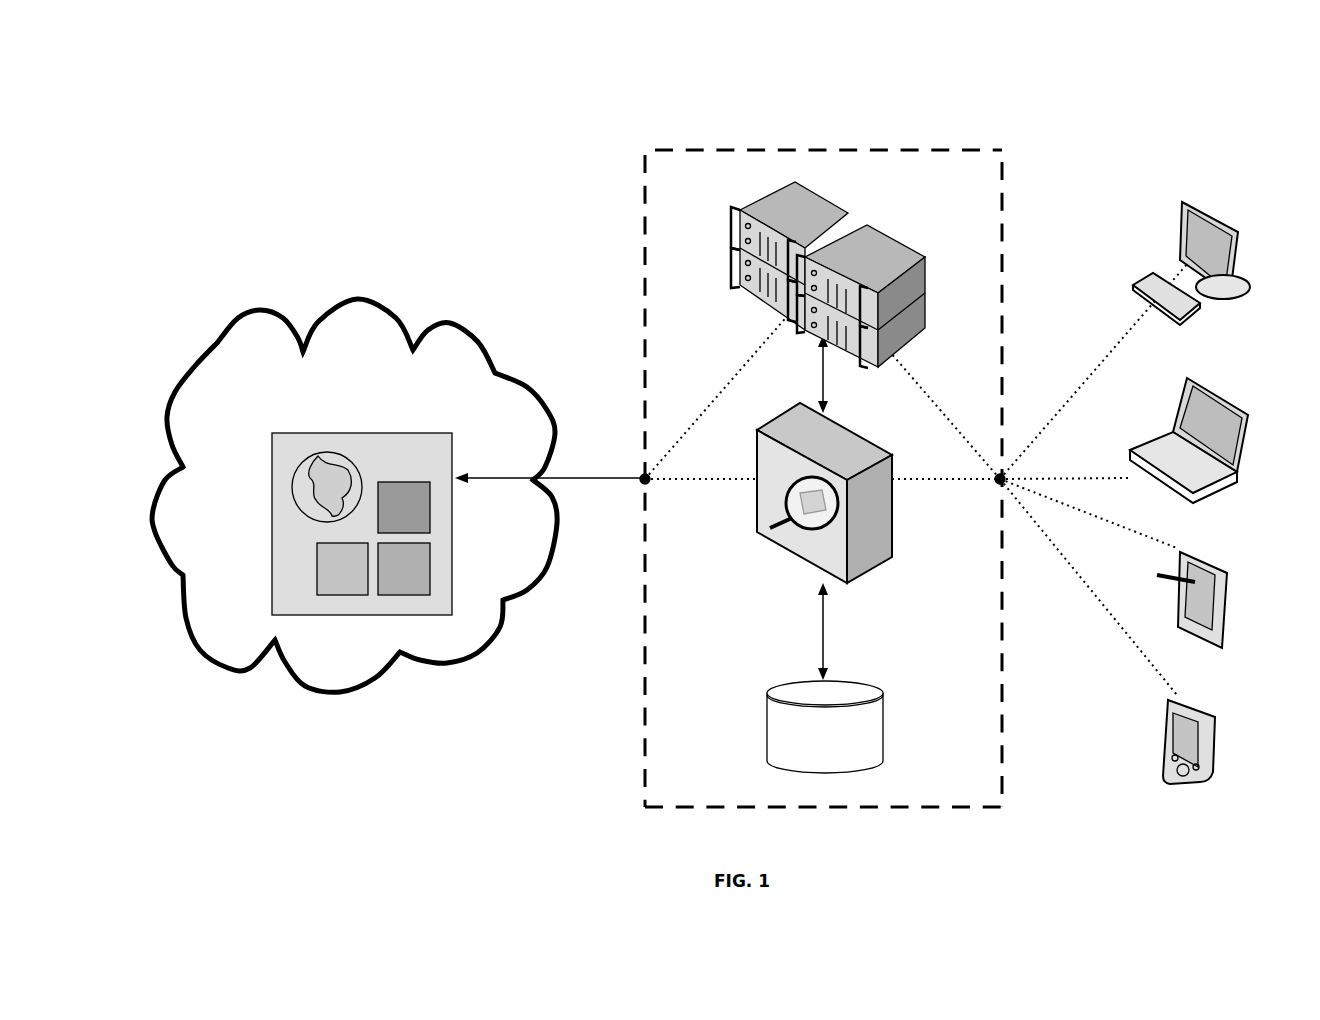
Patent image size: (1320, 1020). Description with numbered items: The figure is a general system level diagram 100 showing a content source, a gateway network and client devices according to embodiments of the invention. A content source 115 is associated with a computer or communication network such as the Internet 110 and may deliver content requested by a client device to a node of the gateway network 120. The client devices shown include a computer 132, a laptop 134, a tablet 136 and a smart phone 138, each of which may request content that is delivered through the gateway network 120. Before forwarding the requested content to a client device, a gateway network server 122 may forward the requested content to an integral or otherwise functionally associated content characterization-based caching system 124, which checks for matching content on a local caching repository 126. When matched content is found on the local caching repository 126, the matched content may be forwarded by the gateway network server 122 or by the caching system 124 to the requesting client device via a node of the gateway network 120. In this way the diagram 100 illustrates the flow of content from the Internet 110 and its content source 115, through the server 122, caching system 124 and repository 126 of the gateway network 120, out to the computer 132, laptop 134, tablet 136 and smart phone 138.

The general system level diagram 100 is at (165, 125).
The Internet 110 is at (222, 333).
The content source 115 is at (272, 520).
The gateway network 120 is at (643, 210).
The gateway network server 122 is at (757, 203).
The content characterization-based caching system 124 is at (817, 567).
The local caching repository 126 is at (767, 722).
The computer 132 is at (1210, 210).
The laptop 134 is at (1210, 387).
The tablet 136 is at (1202, 550).
The smart phone 138 is at (1192, 700).